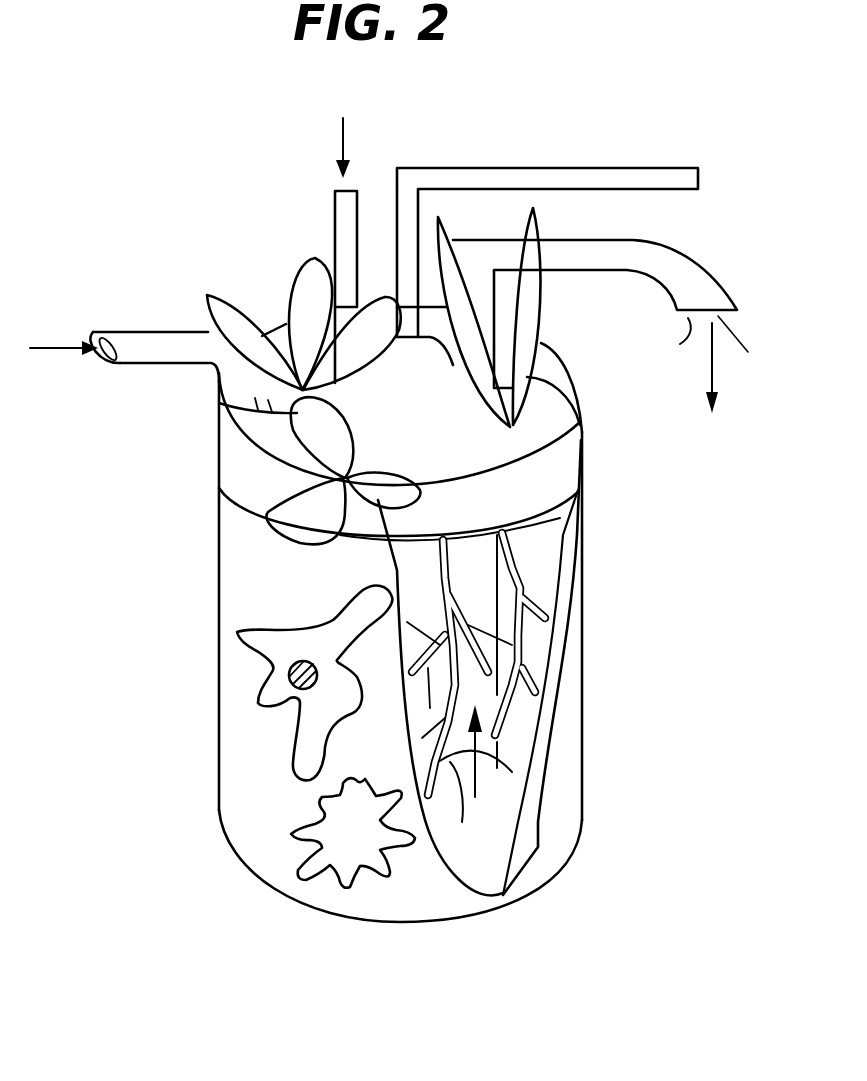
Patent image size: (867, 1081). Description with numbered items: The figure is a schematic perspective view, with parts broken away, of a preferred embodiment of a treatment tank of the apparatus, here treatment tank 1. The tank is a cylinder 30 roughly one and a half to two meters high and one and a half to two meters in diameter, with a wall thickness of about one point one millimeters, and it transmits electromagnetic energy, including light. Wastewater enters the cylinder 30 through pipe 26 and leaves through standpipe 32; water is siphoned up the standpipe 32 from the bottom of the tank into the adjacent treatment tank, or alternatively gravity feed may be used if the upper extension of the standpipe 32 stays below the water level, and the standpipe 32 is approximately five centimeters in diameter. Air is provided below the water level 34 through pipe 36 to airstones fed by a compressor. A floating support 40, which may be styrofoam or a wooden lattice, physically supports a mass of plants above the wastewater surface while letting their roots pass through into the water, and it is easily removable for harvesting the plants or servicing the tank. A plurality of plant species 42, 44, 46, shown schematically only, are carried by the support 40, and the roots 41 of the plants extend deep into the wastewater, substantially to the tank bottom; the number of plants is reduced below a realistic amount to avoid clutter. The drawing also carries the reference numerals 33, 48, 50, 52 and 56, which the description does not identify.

The treatment tank 1 is at (608, 841).
The pipe 26 is at (177, 347).
The cylinder 30 is at (580, 693).
The standpipe 32 is at (487, 578).
The outlet pipe 33 is at (672, 265).
The water level 34 is at (540, 523).
The pipe 36 is at (342, 228).
The floating support 40 is at (538, 420).
The roots 41 is at (440, 632).
The plant species 42 is at (543, 283).
The plant species 44 is at (290, 520).
The plant species 46 is at (310, 292).
The particle 48 is at (290, 678).
The amoeboid body 50 is at (320, 635).
The aggregate 52 is at (333, 830).
The return pipe 56 is at (515, 167).